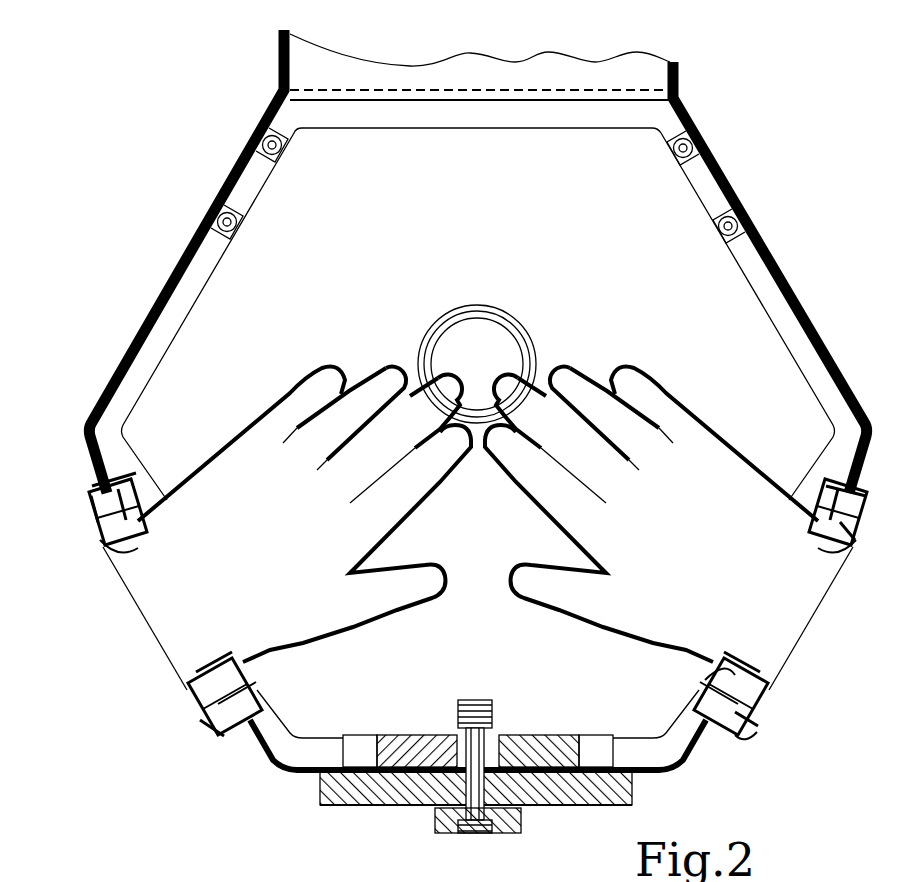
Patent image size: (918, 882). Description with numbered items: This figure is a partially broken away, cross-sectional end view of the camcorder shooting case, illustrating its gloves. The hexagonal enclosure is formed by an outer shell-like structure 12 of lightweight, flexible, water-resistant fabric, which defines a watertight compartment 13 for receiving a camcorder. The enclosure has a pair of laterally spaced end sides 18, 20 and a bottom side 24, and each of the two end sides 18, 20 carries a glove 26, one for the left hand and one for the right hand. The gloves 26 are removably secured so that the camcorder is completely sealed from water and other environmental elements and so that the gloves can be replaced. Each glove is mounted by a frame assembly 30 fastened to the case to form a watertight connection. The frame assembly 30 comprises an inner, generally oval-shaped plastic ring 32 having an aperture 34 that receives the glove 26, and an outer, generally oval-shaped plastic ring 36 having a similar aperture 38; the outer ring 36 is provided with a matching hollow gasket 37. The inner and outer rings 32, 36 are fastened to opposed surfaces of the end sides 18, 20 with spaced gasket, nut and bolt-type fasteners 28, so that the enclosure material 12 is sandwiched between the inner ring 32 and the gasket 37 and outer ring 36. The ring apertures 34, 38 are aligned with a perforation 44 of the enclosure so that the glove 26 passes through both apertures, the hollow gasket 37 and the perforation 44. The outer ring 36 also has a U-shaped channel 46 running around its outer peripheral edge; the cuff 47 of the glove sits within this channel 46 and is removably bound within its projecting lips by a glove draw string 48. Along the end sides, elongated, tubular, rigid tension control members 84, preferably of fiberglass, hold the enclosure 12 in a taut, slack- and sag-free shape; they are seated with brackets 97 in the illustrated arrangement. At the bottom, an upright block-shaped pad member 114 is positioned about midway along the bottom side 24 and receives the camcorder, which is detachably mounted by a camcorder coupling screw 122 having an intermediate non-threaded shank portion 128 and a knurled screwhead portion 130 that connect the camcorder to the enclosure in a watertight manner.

The outer structure 12 is at (302, 62).
The watertight compartment 13 is at (489, 228).
The end side 18 is at (695, 127).
The end side 20 is at (160, 287).
The bottom side 24 is at (640, 795).
The glove 26 is at (310, 368).
The gasket, nut and bolt-type fasteners 28 is at (860, 522).
The frame assembly 30 is at (754, 746).
The inner ring 32 is at (132, 480).
The aperture 34 is at (140, 528).
The outer ring 36 is at (212, 725).
The hollow gasket 37 is at (265, 712).
The aperture 38 is at (195, 672).
The perforation 44 is at (120, 556).
The U-shaped channel 46 is at (855, 495).
The cuff 47 is at (88, 500).
The glove draw string 48 is at (84, 449).
The tension control members 84 is at (253, 137).
The roller bracket 97 is at (273, 160).
The pad member 114 is at (428, 735).
The camcorder coupling screw 122 is at (440, 830).
The shank portion 128 is at (318, 800).
The knurled screwhead portion 130 is at (492, 830).